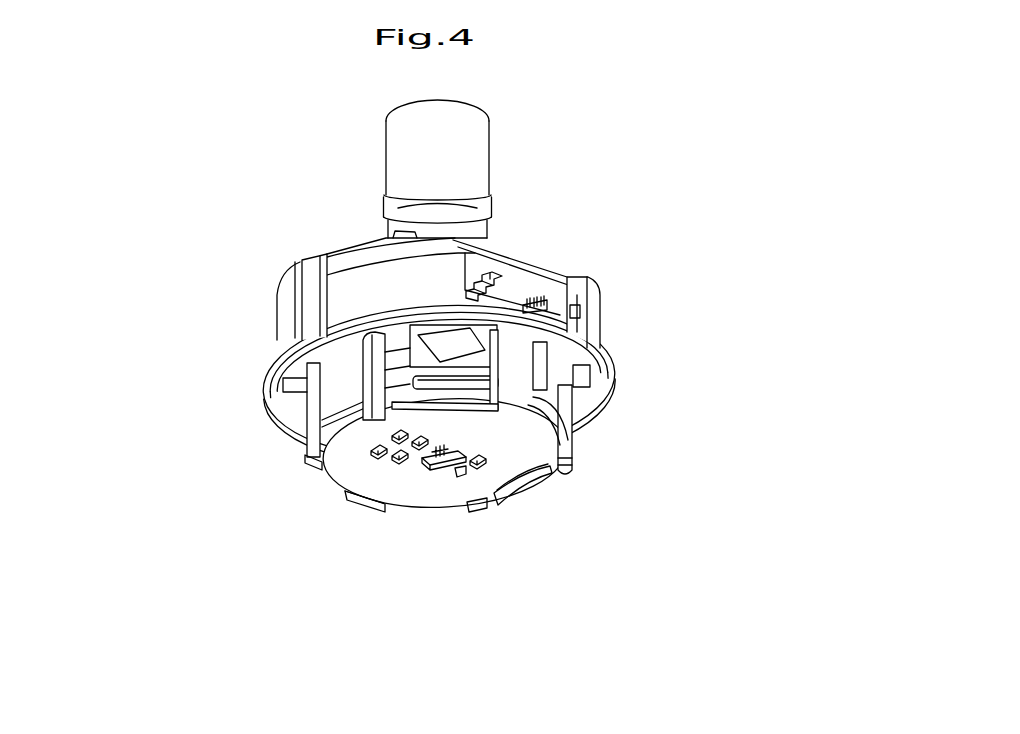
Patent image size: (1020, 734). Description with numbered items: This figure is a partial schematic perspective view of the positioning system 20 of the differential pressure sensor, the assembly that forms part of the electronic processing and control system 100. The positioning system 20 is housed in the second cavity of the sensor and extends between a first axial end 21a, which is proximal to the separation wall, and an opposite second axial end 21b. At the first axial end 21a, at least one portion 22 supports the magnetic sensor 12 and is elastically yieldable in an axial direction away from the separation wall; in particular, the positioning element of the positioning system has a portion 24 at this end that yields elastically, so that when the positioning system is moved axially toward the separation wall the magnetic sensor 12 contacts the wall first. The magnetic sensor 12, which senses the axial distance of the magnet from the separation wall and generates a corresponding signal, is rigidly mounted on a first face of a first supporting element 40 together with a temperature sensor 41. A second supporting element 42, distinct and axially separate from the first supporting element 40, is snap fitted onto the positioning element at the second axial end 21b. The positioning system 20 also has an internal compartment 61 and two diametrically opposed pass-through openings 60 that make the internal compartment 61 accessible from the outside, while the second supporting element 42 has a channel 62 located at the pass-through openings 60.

The electronic processing and control system 100 is at (238, 452).
The positioning system 20 is at (223, 330).
The first axial end 21a is at (320, 480).
The second axial end 21b is at (270, 242).
The portion of the first axial end 22 is at (357, 507).
The portion of the positioning element 24 is at (372, 520).
The magnetic sensor 12 is at (440, 467).
The temperature sensor 41 is at (457, 470).
The first supporting element 40 is at (452, 423).
The second supporting element 42 is at (593, 297).
The pass-through openings 60 is at (570, 315).
The internal compartment 61 is at (505, 295).
The channel 62 is at (543, 277).